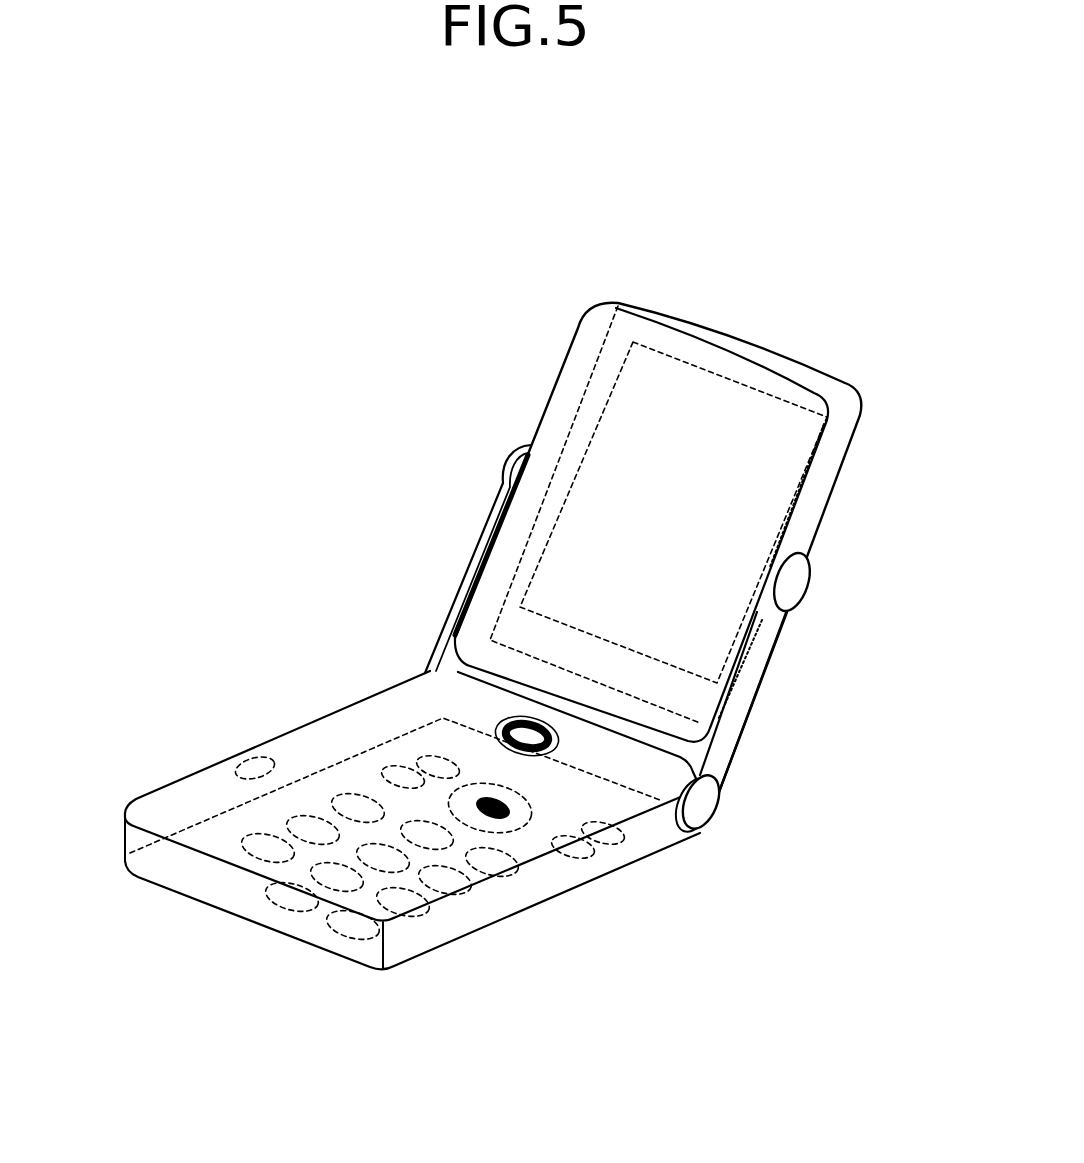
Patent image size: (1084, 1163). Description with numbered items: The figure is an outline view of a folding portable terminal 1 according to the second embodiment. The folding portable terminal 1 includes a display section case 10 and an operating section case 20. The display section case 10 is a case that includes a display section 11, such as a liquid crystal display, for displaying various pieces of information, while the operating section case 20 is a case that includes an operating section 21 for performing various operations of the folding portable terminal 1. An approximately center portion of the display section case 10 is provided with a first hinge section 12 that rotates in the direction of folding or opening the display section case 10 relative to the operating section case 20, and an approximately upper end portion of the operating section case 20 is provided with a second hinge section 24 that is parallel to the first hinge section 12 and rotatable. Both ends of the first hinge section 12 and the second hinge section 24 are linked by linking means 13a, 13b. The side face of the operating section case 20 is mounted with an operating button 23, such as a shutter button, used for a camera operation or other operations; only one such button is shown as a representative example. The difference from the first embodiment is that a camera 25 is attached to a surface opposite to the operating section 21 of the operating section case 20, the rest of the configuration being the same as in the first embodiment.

The folding portable terminal 1 is at (578, 262).
The display section case 10 is at (840, 437).
The display section 11 is at (753, 418).
The first hinge section 12 is at (792, 582).
The linking means 13a is at (463, 573).
The linking means 13b is at (733, 727).
The operating section case 20 is at (177, 868).
The operating section 21 is at (430, 966).
The operating button 23 is at (235, 757).
The second hinge section 24 is at (700, 812).
The camera 25 is at (530, 735).